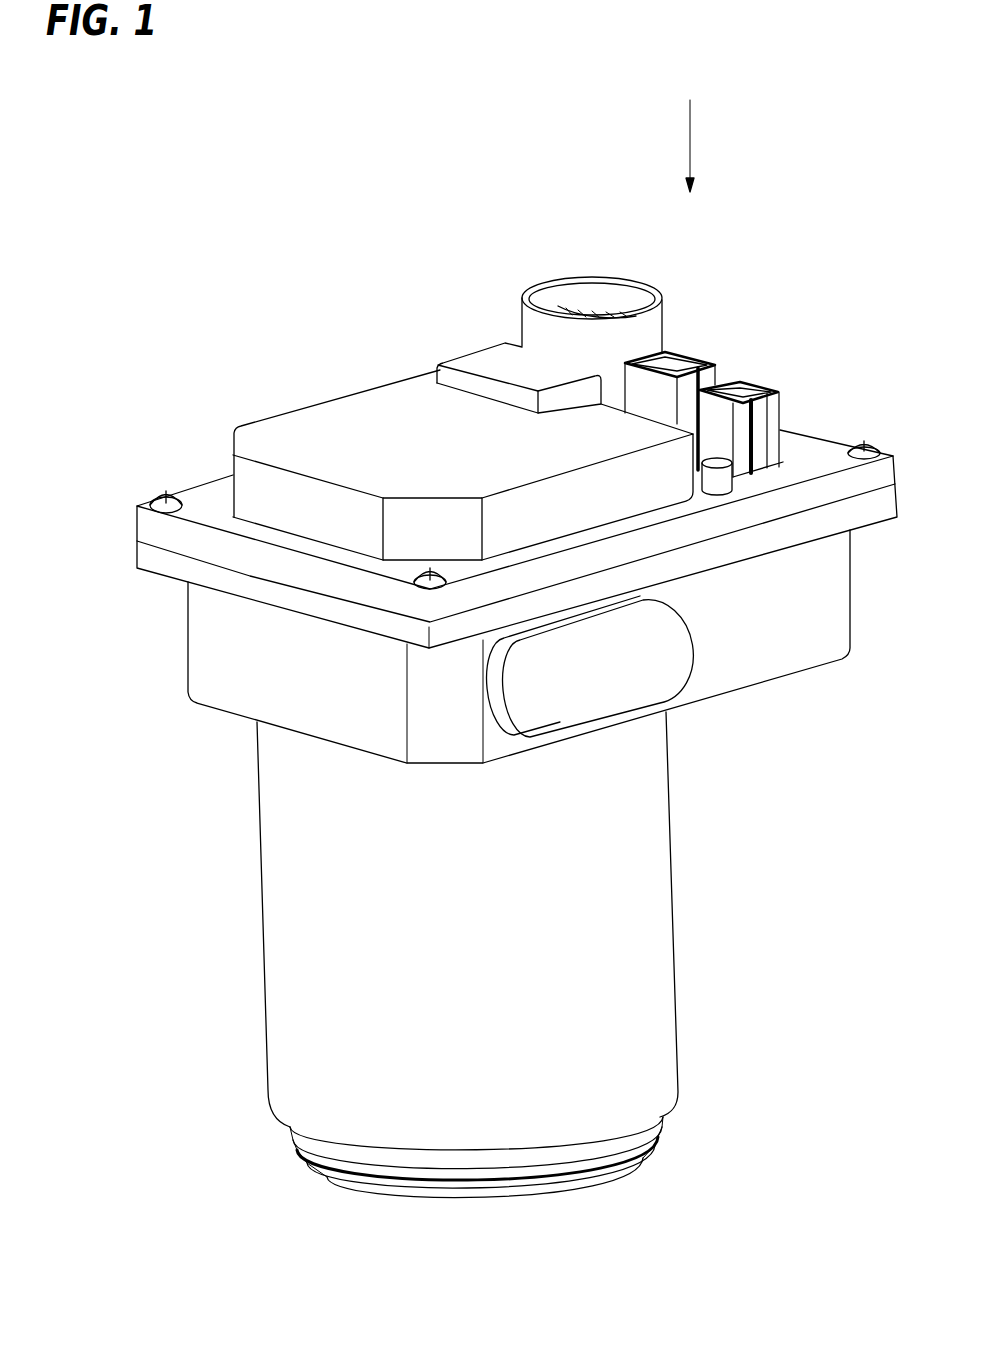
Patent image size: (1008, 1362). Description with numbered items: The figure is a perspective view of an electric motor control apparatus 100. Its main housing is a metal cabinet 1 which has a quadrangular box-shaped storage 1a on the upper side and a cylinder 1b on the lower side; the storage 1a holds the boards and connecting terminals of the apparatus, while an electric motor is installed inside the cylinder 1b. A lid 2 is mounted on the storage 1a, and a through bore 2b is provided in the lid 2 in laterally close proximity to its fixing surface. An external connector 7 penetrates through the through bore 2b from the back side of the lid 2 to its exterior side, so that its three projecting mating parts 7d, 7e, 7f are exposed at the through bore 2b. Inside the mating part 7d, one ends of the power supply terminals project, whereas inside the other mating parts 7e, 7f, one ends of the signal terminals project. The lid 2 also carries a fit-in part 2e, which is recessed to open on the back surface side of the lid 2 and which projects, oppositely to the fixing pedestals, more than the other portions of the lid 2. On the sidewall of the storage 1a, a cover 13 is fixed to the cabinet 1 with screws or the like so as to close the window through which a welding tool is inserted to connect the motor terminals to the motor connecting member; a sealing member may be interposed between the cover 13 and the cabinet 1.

The electric motor control apparatus 100 is at (271, 188).
The cabinet 1 is at (454, 864).
The storage 1a is at (183, 658).
The cylinder 1b is at (263, 970).
The lid 2 is at (272, 418).
The through bore 2b is at (790, 462).
The fit-in part 2e is at (490, 346).
The external connector 7 is at (653, 363).
The mating part 7d is at (618, 297).
The mating part 7e is at (690, 350).
The mating part 7f is at (745, 380).
The cover 13 is at (695, 665).